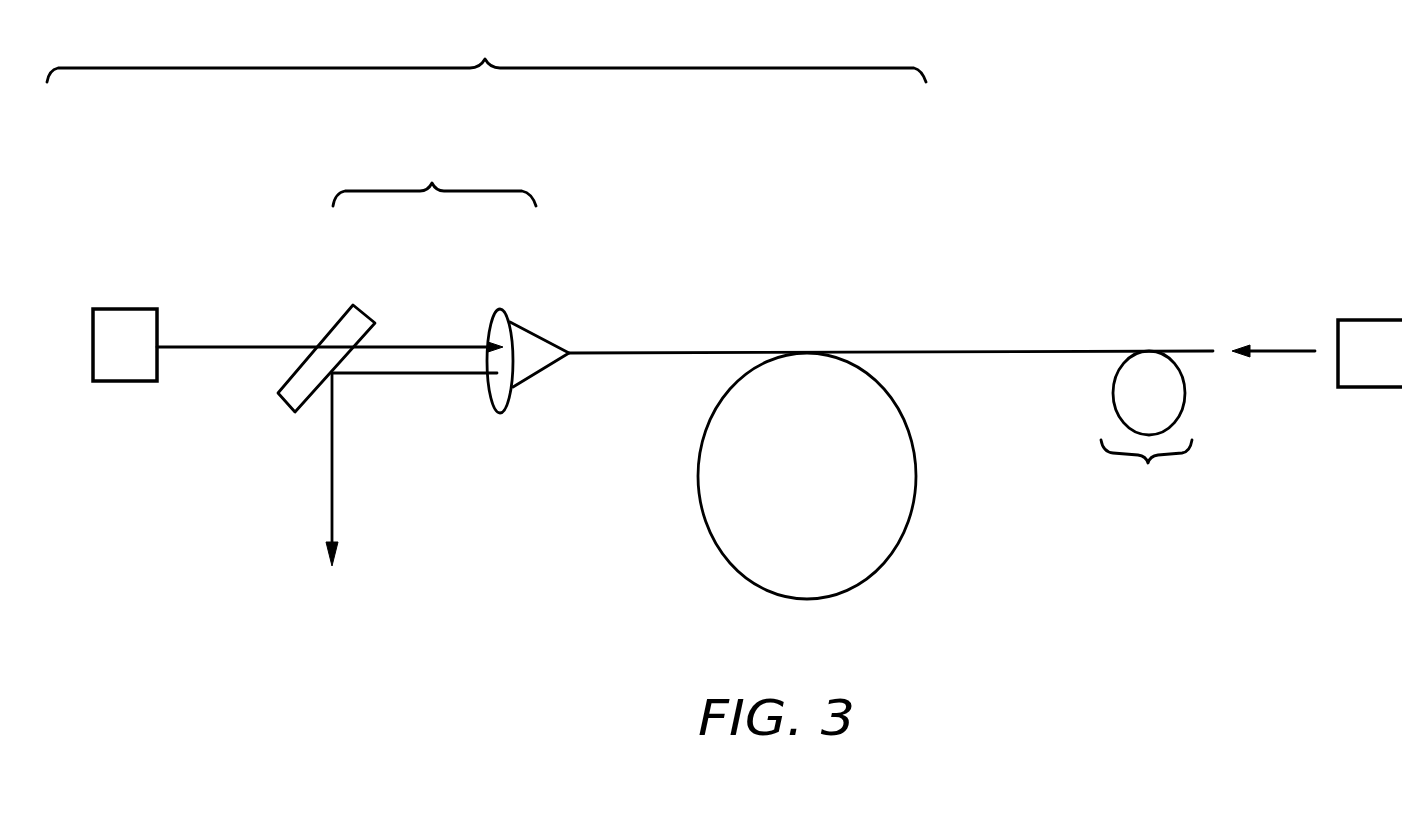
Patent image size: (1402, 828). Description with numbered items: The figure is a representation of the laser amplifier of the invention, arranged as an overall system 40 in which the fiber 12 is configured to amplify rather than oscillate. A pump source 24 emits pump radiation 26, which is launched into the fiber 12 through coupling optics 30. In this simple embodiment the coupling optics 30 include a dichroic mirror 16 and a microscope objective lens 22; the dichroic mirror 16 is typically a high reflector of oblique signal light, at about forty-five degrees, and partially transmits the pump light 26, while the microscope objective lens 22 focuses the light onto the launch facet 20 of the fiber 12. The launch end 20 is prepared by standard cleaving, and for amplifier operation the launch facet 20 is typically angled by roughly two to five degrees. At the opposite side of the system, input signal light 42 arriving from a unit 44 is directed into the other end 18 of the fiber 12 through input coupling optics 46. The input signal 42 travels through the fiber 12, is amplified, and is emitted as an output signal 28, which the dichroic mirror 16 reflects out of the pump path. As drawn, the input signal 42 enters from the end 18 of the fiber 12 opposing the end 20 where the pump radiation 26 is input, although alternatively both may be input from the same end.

The fiber 12 is at (699, 482).
The dichroic mirror 16 is at (353, 305).
The end of the fiber 18 is at (1075, 352).
The launch facet 20 is at (570, 356).
The microscope objective lens 22 is at (502, 310).
The pump source 24 is at (141, 366).
The pump radiation 26 is at (222, 347).
The output signal 28 is at (333, 466).
The coupling optics 30 is at (434, 176).
The sensor system 40 is at (486, 53).
The input signal light 42 is at (1276, 353).
The detector 44 is at (1362, 366).
The input coupling optics 46 is at (1146, 426).